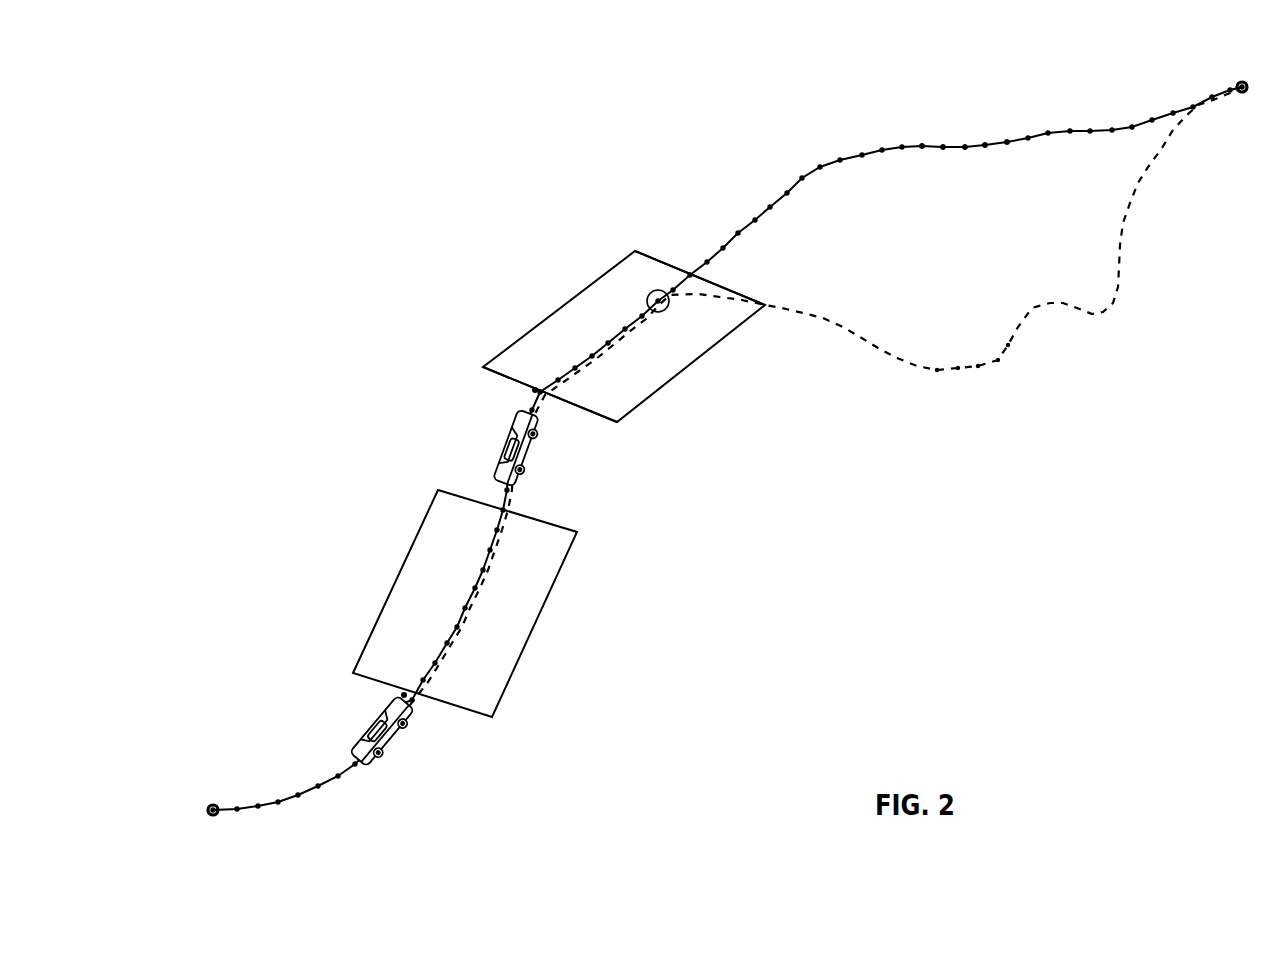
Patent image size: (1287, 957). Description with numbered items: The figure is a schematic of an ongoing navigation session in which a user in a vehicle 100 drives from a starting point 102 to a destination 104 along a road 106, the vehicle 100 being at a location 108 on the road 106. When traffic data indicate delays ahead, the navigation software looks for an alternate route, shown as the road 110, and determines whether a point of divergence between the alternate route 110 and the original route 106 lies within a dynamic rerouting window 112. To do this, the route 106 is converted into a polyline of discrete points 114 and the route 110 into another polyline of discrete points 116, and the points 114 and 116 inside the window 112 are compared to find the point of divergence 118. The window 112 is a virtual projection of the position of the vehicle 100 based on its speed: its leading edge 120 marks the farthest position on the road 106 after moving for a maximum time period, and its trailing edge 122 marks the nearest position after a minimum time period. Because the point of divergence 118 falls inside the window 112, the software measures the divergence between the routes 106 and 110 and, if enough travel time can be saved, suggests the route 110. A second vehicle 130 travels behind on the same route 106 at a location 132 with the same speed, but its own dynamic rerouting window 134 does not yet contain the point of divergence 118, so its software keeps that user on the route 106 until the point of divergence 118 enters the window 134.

The vehicle 100 is at (529, 457).
The starting point 102 is at (267, 813).
The destination 104 is at (1206, 90).
The road 106 is at (832, 162).
The location 108 is at (530, 393).
The road 110 is at (1072, 307).
The dynamic rerouting window 112 is at (669, 399).
The discrete points 114 is at (1007, 133).
The discrete points 116 is at (943, 378).
The point of divergence 118 is at (662, 313).
The leading edge 120 is at (662, 260).
The trailing edge 122 is at (493, 376).
The vehicle 130 is at (391, 742).
The location 132 is at (398, 696).
The dynamic rerouting window 134 is at (535, 643).